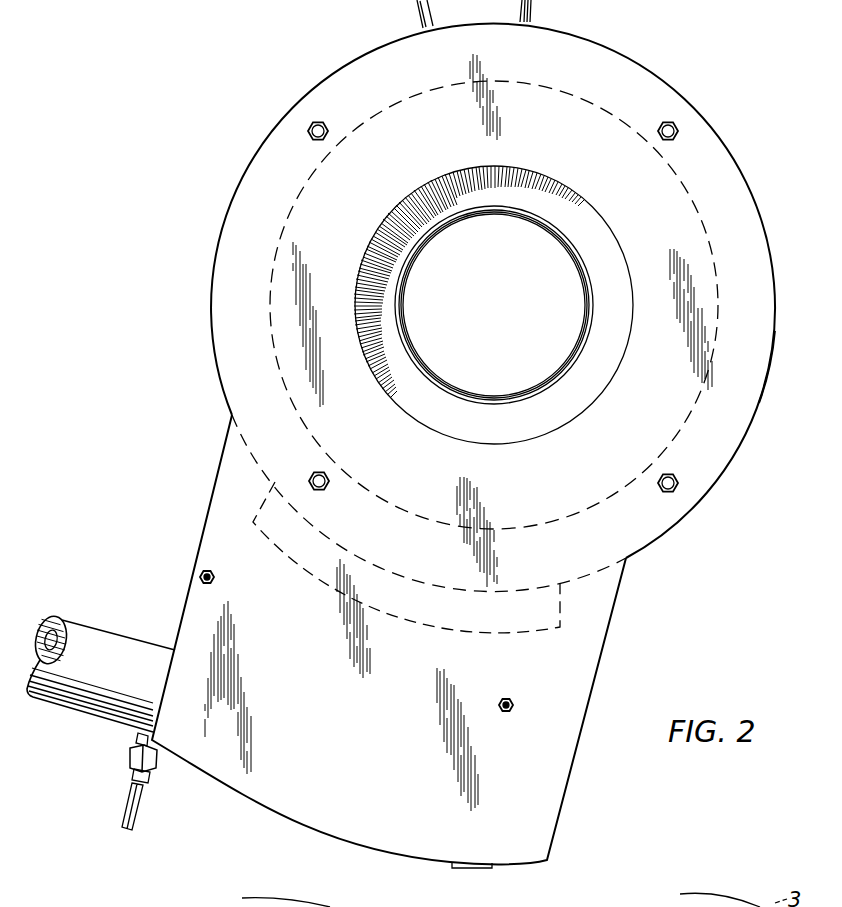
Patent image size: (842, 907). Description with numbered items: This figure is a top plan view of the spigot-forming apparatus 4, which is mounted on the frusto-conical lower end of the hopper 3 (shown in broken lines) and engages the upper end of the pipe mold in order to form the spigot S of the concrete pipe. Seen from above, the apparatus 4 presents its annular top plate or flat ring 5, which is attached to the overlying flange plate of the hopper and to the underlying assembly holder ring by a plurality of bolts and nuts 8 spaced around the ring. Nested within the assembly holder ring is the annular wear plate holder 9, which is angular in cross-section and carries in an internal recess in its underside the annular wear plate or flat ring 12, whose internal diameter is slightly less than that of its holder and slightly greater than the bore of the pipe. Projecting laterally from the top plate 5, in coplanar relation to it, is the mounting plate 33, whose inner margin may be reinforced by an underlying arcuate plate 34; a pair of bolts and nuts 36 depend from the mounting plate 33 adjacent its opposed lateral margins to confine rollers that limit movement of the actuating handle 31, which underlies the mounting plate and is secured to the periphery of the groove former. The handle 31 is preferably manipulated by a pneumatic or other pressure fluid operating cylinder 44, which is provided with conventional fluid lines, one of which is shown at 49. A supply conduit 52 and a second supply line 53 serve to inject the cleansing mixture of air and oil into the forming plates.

The apparatus 4 is at (228, 212).
The hopper 3 is at (690, 410).
The top plate 5 is at (769, 373).
The bolts and nuts 8 is at (677, 133).
The wear plate holder 9 is at (581, 242).
The wear plate 12 is at (410, 342).
The spigot S is at (543, 387).
The mounting plate 33 is at (565, 794).
The actuating handle 31 is at (452, 866).
The arcuate plate 34 is at (333, 588).
The bolts and nuts 36 is at (200, 575).
The pressure fluid operating cylinder 44 is at (98, 629).
The fluid line 49 is at (130, 792).
The supply conduit 52 is at (535, 13).
The second supply line 53 is at (415, 9).